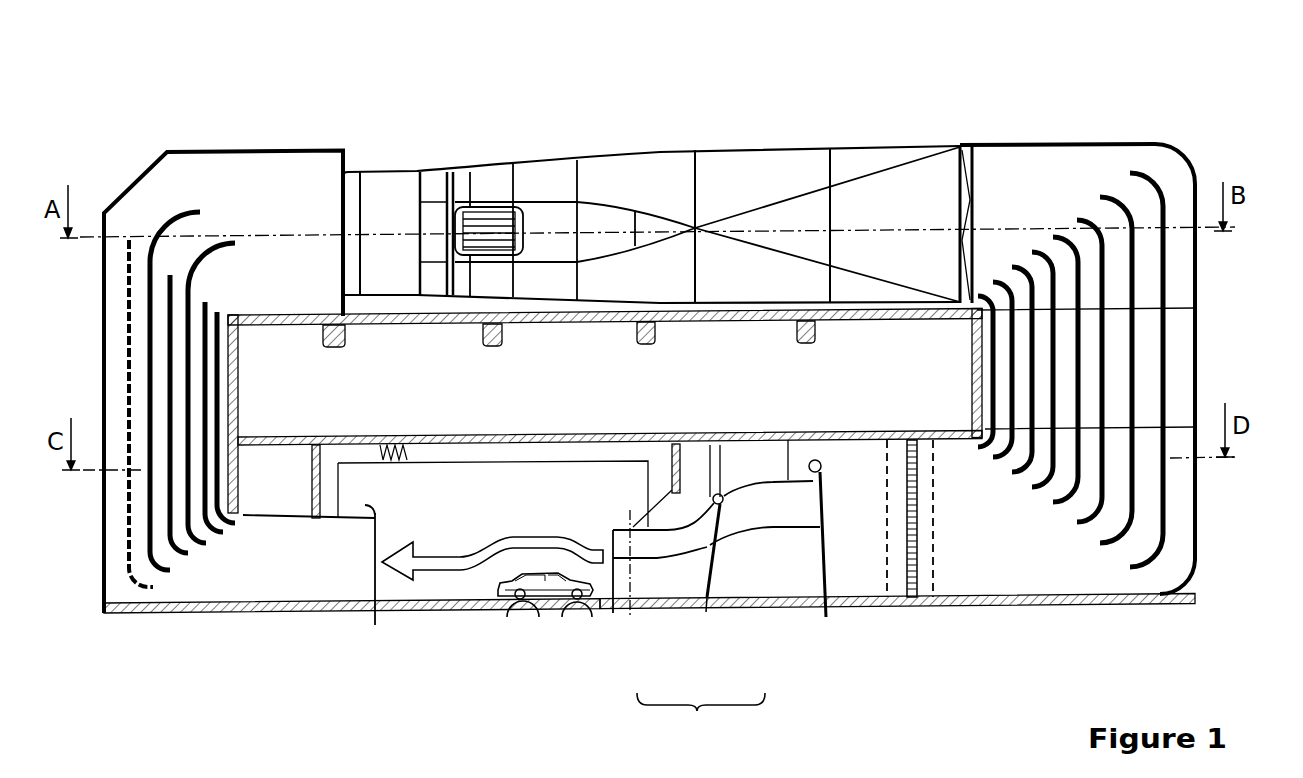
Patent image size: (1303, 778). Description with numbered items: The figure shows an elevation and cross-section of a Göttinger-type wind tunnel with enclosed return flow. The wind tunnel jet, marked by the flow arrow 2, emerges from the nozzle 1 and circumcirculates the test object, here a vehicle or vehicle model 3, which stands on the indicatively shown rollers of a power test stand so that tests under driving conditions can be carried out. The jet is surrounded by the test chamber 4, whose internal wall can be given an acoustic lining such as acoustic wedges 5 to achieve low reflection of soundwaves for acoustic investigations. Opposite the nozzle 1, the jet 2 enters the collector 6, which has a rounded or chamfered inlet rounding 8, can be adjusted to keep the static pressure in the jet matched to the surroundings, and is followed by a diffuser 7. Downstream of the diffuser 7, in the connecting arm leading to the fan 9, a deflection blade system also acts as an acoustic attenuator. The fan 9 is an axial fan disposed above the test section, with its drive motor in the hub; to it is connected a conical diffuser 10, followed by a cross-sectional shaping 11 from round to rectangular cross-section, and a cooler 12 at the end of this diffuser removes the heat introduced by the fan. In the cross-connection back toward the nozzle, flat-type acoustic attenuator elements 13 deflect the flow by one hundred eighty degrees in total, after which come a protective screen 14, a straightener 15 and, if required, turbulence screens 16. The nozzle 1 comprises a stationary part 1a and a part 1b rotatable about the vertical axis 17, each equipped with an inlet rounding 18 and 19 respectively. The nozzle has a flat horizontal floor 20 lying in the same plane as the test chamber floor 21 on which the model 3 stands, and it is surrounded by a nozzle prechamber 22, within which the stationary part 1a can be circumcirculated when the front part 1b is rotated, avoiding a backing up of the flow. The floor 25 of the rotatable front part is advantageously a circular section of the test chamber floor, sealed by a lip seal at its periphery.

The nozzle 1 is at (701, 722).
The stationary nozzle part 1a is at (760, 562).
The rotatable nozzle front part 1b is at (653, 580).
The wind tunnel jet 2 is at (495, 550).
The vehicle or vehicle model 3 is at (543, 570).
The test chamber 4 is at (493, 520).
The acoustic wedges 5 is at (393, 444).
The collector 6 is at (367, 567).
The diffuser 7 is at (213, 565).
The inlet rounding 8 is at (367, 507).
The fan 9 is at (433, 187).
The conical diffuser 10 is at (615, 185).
The cross-sectional shaping 11 is at (770, 217).
The cooler 12 is at (958, 208).
The flat-type acoustic attenuator elements 13 is at (1000, 360).
The protective screen 14 is at (932, 473).
The straightener 15 is at (908, 487).
The turbulence screens 16 is at (887, 527).
The vertical axis 17 is at (632, 528).
The inlet rounding 18 is at (822, 473).
The inlet rounding 19 is at (720, 443).
The nozzle floor 20 is at (797, 603).
The test chamber floor 21 is at (470, 613).
The nozzle prechamber 22 is at (762, 460).
The floor of the rotatable nozzle front part 25 is at (617, 603).